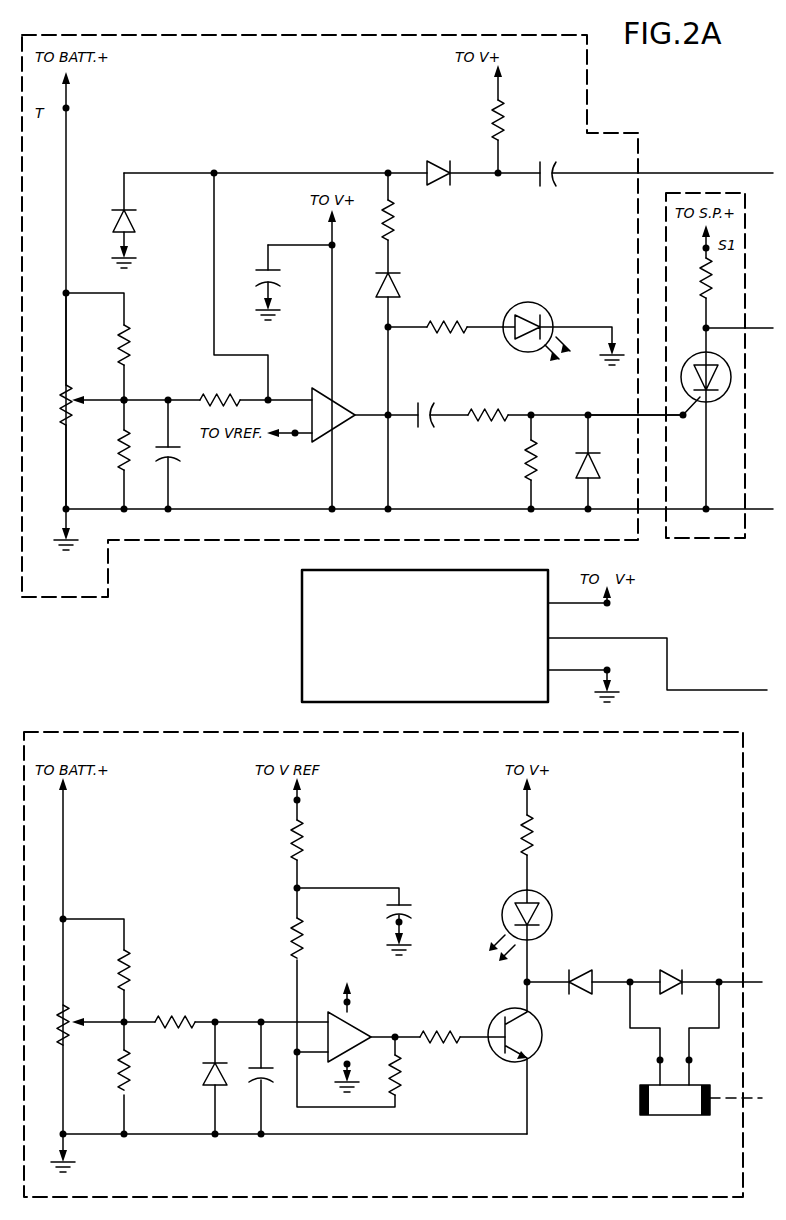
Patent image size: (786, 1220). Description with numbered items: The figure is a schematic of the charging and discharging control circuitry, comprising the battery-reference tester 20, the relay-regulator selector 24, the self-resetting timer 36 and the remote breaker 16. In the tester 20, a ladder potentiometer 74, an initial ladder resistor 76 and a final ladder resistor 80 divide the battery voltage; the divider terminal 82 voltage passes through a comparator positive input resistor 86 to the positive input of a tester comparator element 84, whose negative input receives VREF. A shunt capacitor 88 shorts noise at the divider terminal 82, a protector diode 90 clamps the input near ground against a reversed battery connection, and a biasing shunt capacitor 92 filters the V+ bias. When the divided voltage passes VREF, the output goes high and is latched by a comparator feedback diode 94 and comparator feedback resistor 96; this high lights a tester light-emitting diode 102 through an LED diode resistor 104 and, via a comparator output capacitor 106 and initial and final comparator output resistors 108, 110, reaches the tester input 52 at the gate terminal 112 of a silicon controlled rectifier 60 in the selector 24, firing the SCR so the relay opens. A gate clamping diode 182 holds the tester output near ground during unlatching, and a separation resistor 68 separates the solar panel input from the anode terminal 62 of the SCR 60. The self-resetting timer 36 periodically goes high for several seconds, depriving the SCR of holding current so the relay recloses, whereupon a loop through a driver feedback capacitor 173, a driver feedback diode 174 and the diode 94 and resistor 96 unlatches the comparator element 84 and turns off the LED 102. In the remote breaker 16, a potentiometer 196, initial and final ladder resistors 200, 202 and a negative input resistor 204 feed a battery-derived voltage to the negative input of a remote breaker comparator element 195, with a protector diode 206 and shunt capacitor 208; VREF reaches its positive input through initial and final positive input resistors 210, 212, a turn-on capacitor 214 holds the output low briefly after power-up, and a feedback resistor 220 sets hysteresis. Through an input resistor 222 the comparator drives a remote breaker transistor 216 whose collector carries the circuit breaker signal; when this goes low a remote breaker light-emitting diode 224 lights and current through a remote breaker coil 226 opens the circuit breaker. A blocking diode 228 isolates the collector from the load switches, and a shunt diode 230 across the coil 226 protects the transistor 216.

The remote breaker 16 is at (108, 730).
The battery-reference tester 20 is at (205, 543).
The relay-regulator selector 24 is at (695, 541).
The self-resetting timer 36 is at (302, 605).
The tester input 52 is at (686, 418).
The silicon controlled rectifier 60 is at (708, 396).
The anode terminal 62 is at (708, 323).
The separation resistor 68 is at (700, 288).
The ladder potentiometer 74 is at (58, 400).
The initial ladder resistor 76 is at (128, 348).
The final ladder resistor 80 is at (119, 455).
The divider terminal 82 is at (128, 400).
The tester comparator element 84 is at (336, 424).
The comparator positive input resistor 86 is at (207, 400).
The shunt capacitor 88 is at (173, 463).
The protector diode 90 is at (118, 225).
The biasing shunt capacitor 92 is at (260, 282).
The comparator feedback diode 94 is at (400, 282).
The comparator feedback resistor 96 is at (395, 226).
The tester light-emitting diode 102 is at (540, 305).
The LED diode resistor 104 is at (446, 320).
The comparator output capacitor 106 is at (428, 398).
The initial comparator output resistor 108 is at (490, 400).
The final comparator output resistor 110 is at (524, 455).
The gate terminal 112 is at (680, 410).
The driver feedback capacitor 173 is at (538, 182).
The driver feedback diode 174 is at (436, 160).
The gate clamping diode 182 is at (578, 458).
The remote breaker comparator element 195 is at (358, 1028).
The potentiometer 196 is at (68, 1003).
The initial ladder resistor 200 is at (130, 968).
The final ladder resistor 202 is at (130, 1075).
The negative input resistor 204 is at (172, 1015).
The protector diode 206 is at (208, 1068).
The shunt capacitor 208 is at (257, 1080).
The initial positive input resistor 210 is at (303, 848).
The final positive input resistor 212 is at (305, 940).
The turn-on capacitor 214 is at (412, 908).
The remote breaker transistor 216 is at (543, 1048).
The feedback resistor 220 is at (398, 1090).
The input resistor 222 is at (442, 1046).
The remote breaker light-emitting diode 224 is at (540, 898).
The remote breaker coil 226 is at (665, 1117).
The blocking diode 228 is at (600, 965).
The shunt diode 230 is at (687, 960).